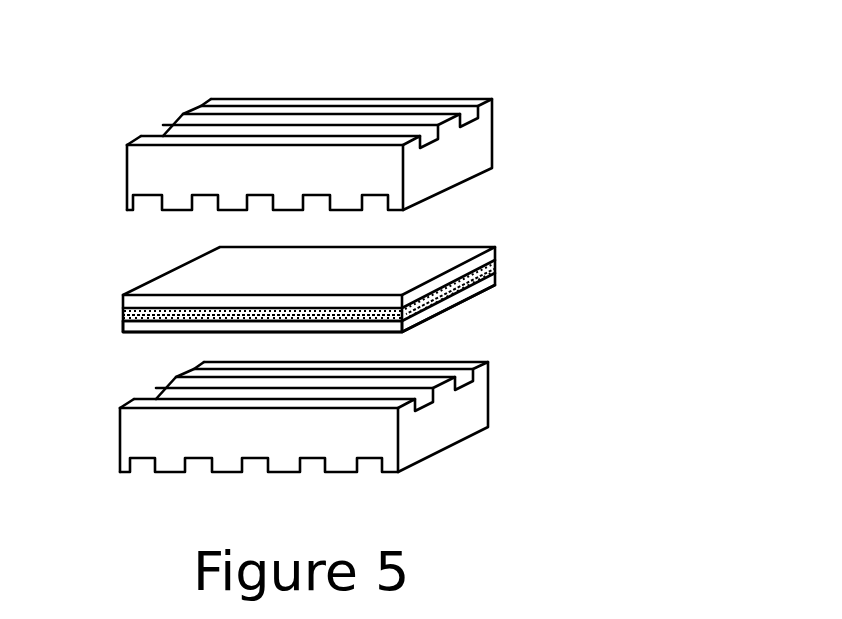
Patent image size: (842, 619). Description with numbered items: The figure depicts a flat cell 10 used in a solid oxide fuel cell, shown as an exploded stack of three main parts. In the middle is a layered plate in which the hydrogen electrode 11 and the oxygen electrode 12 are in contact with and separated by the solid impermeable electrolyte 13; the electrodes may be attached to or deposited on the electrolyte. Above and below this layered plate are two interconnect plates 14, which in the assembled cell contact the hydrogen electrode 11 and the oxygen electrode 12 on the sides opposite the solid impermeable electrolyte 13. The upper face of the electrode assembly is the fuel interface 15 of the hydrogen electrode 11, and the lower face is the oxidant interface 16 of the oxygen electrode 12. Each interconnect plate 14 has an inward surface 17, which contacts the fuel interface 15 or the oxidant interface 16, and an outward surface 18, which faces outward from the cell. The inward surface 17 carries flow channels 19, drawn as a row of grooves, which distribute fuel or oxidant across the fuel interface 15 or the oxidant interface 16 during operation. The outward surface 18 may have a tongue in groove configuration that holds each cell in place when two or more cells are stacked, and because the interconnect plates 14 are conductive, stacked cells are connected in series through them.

The flat cell 10 is at (545, 53).
The hydrogen electrode 11 is at (493, 252).
The oxygen electrode 12 is at (477, 290).
The solid impermeable electrolyte 13 is at (497, 275).
The interconnect plates 14 is at (467, 153).
The fuel interface 15 is at (395, 262).
The oxidant interface 16 is at (427, 320).
The inward surface 17 is at (158, 212).
The outward surface 18 is at (197, 112).
The flow channels 19 is at (317, 208).